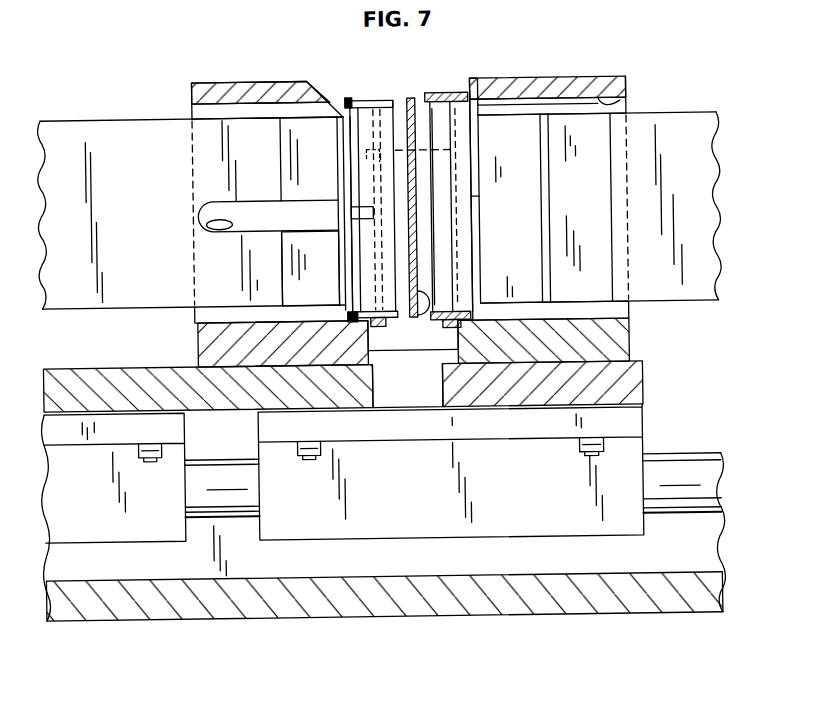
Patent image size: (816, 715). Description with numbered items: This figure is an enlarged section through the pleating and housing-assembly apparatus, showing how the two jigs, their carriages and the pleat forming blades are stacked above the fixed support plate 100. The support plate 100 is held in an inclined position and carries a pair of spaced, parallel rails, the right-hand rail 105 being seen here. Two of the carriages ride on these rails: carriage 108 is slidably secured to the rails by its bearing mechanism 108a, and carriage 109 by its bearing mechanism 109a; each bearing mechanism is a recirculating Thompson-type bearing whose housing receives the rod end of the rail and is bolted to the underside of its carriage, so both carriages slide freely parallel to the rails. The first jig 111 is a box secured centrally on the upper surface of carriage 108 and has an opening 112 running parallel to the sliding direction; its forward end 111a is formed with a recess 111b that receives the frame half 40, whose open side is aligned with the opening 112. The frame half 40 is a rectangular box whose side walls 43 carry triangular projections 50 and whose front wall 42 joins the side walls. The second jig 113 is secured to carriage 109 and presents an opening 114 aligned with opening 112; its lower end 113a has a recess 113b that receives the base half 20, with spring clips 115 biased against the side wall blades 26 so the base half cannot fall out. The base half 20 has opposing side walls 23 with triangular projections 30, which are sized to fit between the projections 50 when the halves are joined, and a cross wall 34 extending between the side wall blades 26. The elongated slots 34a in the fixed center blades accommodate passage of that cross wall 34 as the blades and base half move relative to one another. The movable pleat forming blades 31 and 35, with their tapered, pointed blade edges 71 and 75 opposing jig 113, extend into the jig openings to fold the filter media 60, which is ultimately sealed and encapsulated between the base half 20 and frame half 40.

The support plate 100 is at (192, 617).
The second rail 105 is at (237, 549).
The carriage 108 is at (644, 380).
The bearing mechanism 108a is at (466, 533).
The carriage 109 is at (72, 376).
The bearing mechanism 109a is at (99, 528).
The first jig 111 is at (613, 81).
The forward end 111a is at (483, 115).
The recess 111b is at (461, 254).
The opening 112 is at (618, 105).
The second jig 113 is at (196, 81).
The lower end 113a is at (333, 93).
The recess 113b is at (354, 166).
The opening 114 is at (197, 108).
The spring clips 115 is at (381, 149).
The base half 20 is at (345, 96).
The side walls 23 is at (369, 102).
The side wall blades 26 is at (368, 257).
The triangular shaped projections 30 is at (374, 104).
The pleat forming blade 31 is at (699, 130).
The cross wall 34 is at (350, 215).
The elongated slots 34a is at (206, 228).
The pleat forming blade 35 is at (523, 121).
The frame half 40 is at (472, 95).
The front wall 42 is at (443, 226).
The side walls 43 is at (446, 95).
The triangular shaped projections 50 is at (447, 108).
The filter media 60 is at (411, 100).
The blade edge 71 is at (556, 195).
The blade edge 75 is at (474, 192).